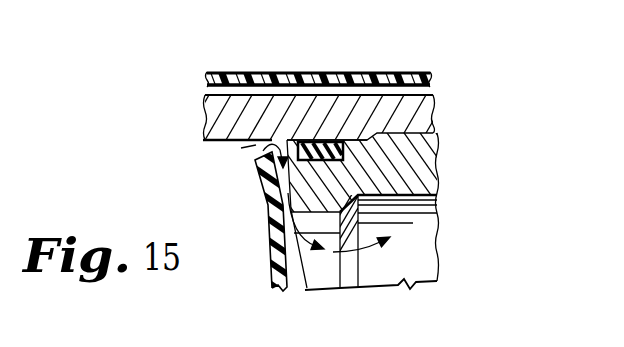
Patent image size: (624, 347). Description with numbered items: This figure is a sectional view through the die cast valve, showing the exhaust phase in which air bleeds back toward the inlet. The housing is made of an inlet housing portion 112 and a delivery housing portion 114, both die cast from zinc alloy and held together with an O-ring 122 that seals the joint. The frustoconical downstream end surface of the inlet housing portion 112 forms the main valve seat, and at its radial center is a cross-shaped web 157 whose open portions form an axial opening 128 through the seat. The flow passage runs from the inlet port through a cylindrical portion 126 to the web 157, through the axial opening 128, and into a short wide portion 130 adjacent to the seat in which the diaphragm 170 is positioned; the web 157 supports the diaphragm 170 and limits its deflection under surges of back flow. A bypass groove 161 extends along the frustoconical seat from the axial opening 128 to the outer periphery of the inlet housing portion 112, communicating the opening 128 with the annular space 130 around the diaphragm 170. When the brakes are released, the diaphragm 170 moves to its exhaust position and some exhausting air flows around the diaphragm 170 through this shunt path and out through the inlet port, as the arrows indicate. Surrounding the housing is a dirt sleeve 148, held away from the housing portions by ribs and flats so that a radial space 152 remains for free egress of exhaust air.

The inlet housing portion 112 is at (427, 157).
The delivery housing portion 114 is at (425, 113).
The O-ring 122 is at (320, 141).
The cylindrical portion of the flow passage 126 is at (413, 227).
The axial opening 128 is at (333, 244).
The short wide portion of the flow passage 130 is at (272, 139).
The dirt sleeve 148 is at (287, 73).
The radial space 152 is at (376, 92).
The cross-shaped web 157 is at (334, 278).
The bypass groove 161 is at (285, 179).
The diaphragm 170 is at (276, 235).